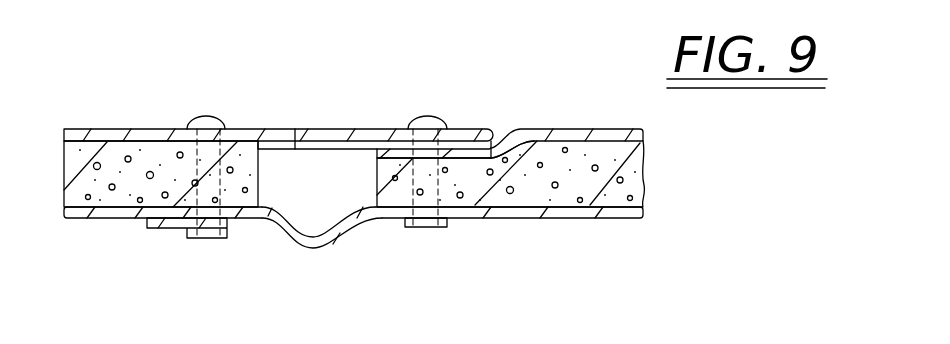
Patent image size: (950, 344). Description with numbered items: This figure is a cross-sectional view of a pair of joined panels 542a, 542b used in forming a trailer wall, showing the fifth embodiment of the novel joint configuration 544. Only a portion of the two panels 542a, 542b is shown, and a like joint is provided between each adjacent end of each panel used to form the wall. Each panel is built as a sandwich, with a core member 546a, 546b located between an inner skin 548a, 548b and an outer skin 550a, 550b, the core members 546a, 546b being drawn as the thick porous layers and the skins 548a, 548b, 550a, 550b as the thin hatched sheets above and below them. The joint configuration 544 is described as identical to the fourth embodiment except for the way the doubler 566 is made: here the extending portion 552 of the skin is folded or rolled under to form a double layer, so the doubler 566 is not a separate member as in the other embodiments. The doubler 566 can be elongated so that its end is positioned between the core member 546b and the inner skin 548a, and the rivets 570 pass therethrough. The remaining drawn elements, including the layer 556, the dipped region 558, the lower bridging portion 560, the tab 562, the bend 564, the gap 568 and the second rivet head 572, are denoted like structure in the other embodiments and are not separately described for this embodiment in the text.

The panel 542a is at (78, 185).
The panel 542b is at (615, 172).
The joint configuration 544 is at (300, 277).
The core member 546a is at (73, 152).
The core member 546b is at (622, 153).
The inner skin 548a is at (142, 130).
The inner skin 548b is at (597, 130).
The outer skin 550a is at (118, 217).
The outer skin 550b is at (622, 210).
The extending portion 552 is at (277, 130).
The intermediate layer 556 is at (340, 135).
The bottom sheet dip 558 is at (288, 242).
The lower bridging sheet 560 is at (342, 248).
The fastener tab 562 is at (173, 227).
The bend 564 is at (358, 207).
The doubler 566 is at (378, 143).
The gap 568 is at (298, 142).
The rivets 570 is at (215, 118).
The second fastener head 572 is at (430, 118).